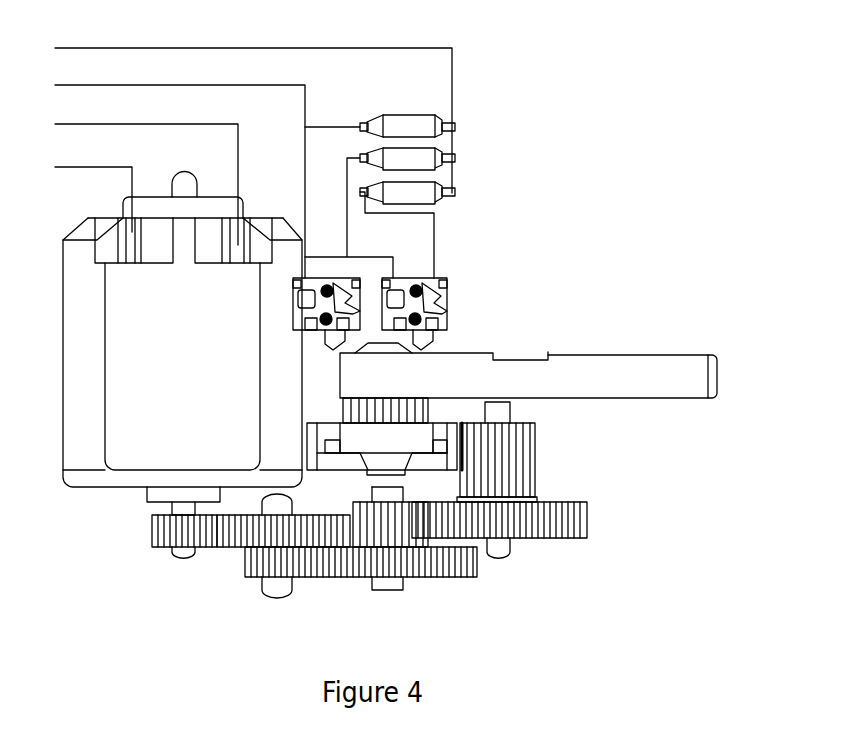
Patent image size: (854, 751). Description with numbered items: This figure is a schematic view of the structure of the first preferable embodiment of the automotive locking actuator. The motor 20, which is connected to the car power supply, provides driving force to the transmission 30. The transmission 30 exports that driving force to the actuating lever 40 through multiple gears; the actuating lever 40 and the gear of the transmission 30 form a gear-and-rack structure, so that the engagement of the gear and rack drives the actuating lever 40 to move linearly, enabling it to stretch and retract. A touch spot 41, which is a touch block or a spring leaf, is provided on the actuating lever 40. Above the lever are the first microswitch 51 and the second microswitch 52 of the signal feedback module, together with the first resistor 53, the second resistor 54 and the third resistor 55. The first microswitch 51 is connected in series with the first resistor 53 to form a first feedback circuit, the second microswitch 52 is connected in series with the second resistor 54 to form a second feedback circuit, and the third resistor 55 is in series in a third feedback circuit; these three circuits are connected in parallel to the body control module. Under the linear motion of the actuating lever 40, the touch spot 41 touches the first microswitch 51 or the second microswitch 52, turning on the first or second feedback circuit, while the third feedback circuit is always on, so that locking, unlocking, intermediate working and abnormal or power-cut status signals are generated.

The motor 20 is at (133, 465).
The transmission 30 is at (345, 560).
The actuating lever 40 is at (653, 377).
The touch spot 41 is at (380, 350).
The first on-off switch 51 is at (297, 325).
The second on-off switch 52 is at (425, 300).
The first resistor 53 is at (423, 197).
The second resistor 54 is at (418, 167).
The third resistor 55 is at (420, 133).